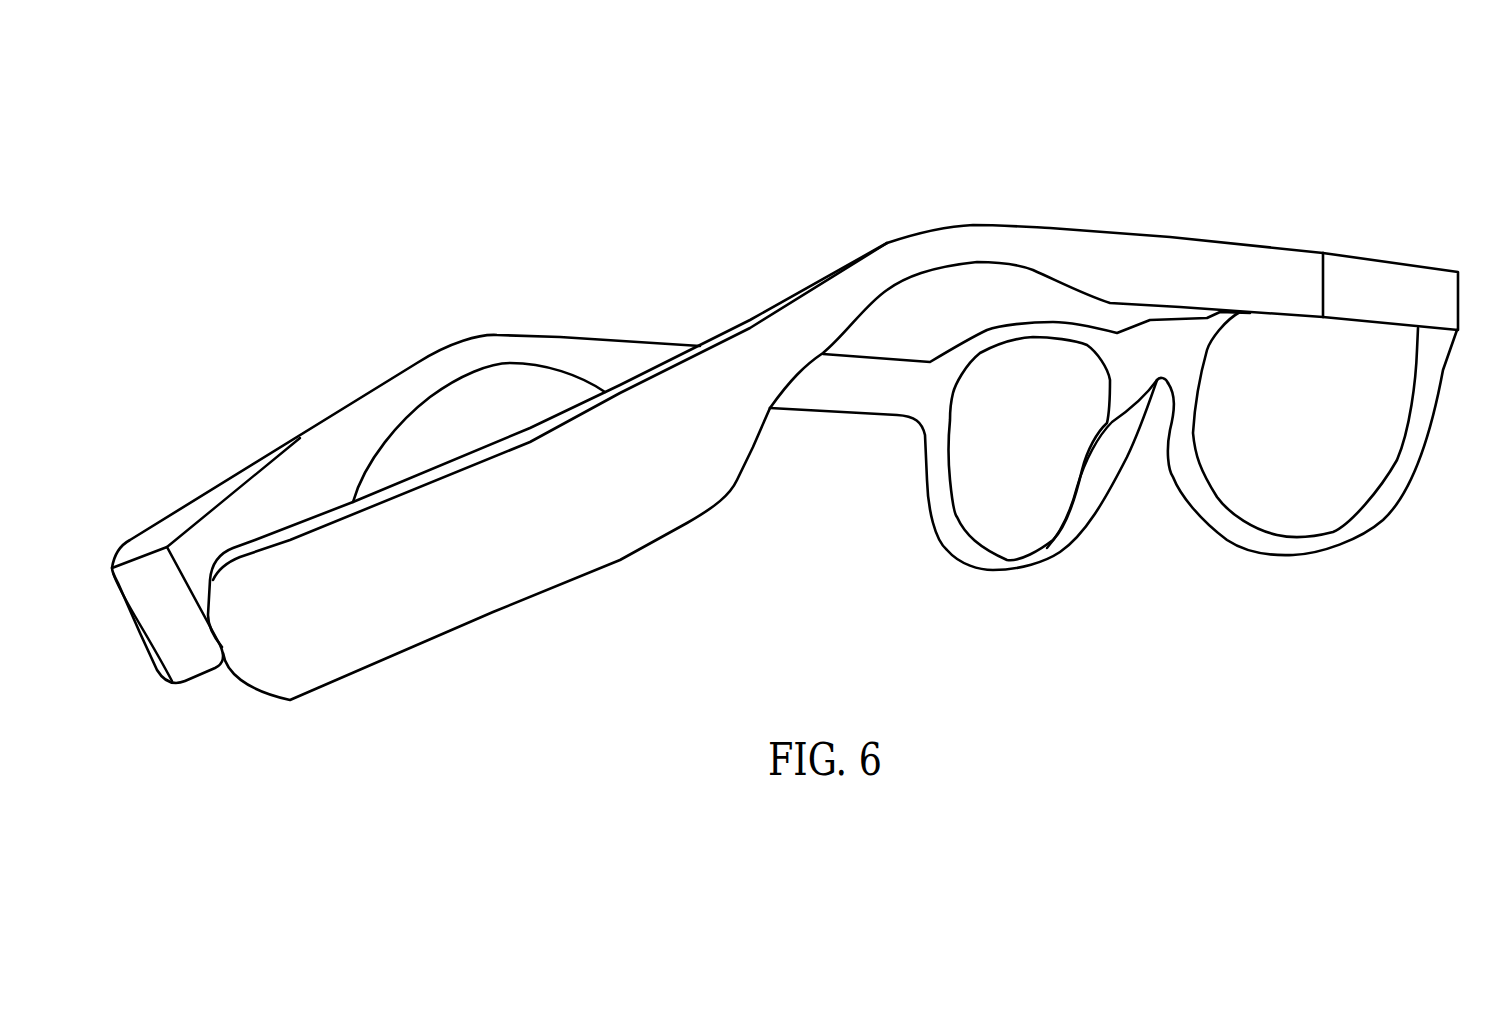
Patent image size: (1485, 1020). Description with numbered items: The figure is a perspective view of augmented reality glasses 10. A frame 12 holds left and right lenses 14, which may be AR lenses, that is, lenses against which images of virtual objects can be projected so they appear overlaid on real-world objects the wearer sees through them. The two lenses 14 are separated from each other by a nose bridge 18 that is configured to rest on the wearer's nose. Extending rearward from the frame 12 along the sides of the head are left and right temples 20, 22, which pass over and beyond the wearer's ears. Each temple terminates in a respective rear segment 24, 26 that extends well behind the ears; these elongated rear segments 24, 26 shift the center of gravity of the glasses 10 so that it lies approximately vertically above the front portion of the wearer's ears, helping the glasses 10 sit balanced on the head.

The augmented reality glasses 10 is at (977, 146).
The frame 12 is at (990, 330).
The lenses 14 is at (997, 535).
The nose bridge 18 is at (1160, 376).
The left temple 20 is at (617, 341).
The right temple 22 is at (917, 245).
The rear segment 24 is at (192, 508).
The rear segment 26 is at (280, 665).